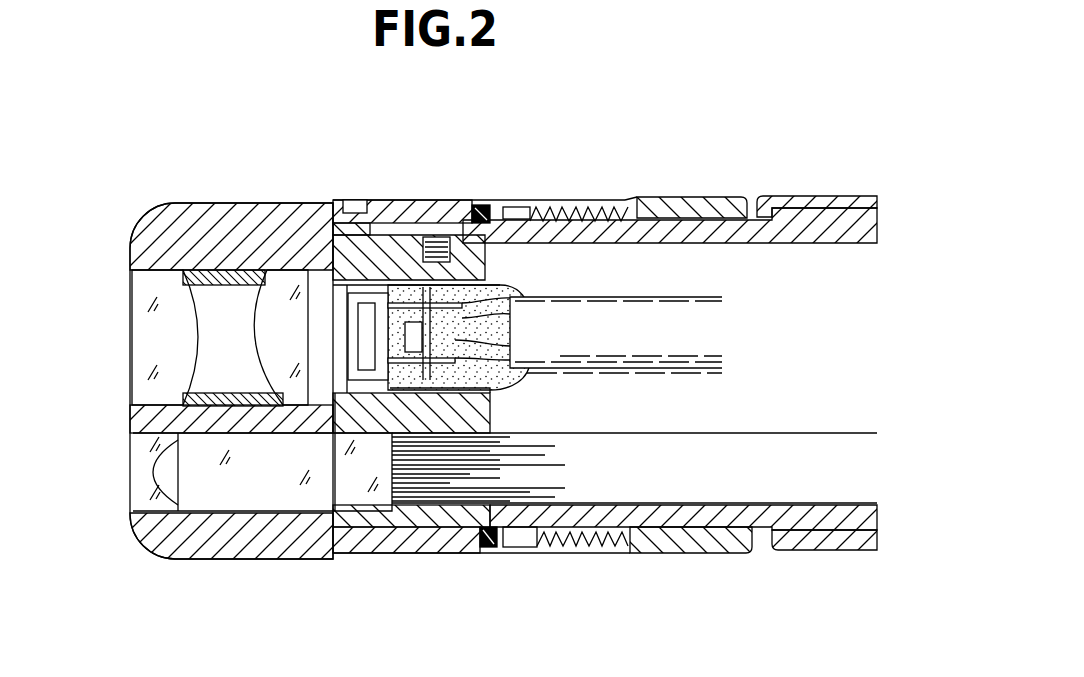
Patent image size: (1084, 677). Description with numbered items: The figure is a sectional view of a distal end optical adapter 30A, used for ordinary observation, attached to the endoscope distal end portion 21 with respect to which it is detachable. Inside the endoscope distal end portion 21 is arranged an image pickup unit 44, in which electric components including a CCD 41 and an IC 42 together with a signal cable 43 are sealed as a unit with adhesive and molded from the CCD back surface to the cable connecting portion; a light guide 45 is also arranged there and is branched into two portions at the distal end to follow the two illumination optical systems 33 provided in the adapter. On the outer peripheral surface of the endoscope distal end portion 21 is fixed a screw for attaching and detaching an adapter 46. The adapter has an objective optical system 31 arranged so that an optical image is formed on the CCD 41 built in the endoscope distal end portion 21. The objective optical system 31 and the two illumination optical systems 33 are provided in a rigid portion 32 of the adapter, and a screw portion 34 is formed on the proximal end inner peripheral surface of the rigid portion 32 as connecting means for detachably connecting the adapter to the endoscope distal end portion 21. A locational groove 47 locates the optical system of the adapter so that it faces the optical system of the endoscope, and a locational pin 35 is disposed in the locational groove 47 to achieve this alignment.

The endoscope distal end portion 21 is at (675, 187).
The distal end optical adapter 30A is at (240, 201).
The objective optical system 31 is at (127, 321).
The rigid portion 32 is at (170, 208).
The illumination optical system 33 is at (127, 459).
The screw portion 34 is at (597, 523).
The locational pin 35 is at (363, 207).
The CCD 41 is at (381, 292).
The IC 42 is at (414, 330).
The signal cable 43 is at (572, 312).
The image pickup unit 44 is at (512, 400).
The light guide 45 is at (762, 470).
The screw for attaching and detaching an adapter 46 is at (730, 203).
The locational groove 47 is at (332, 210).